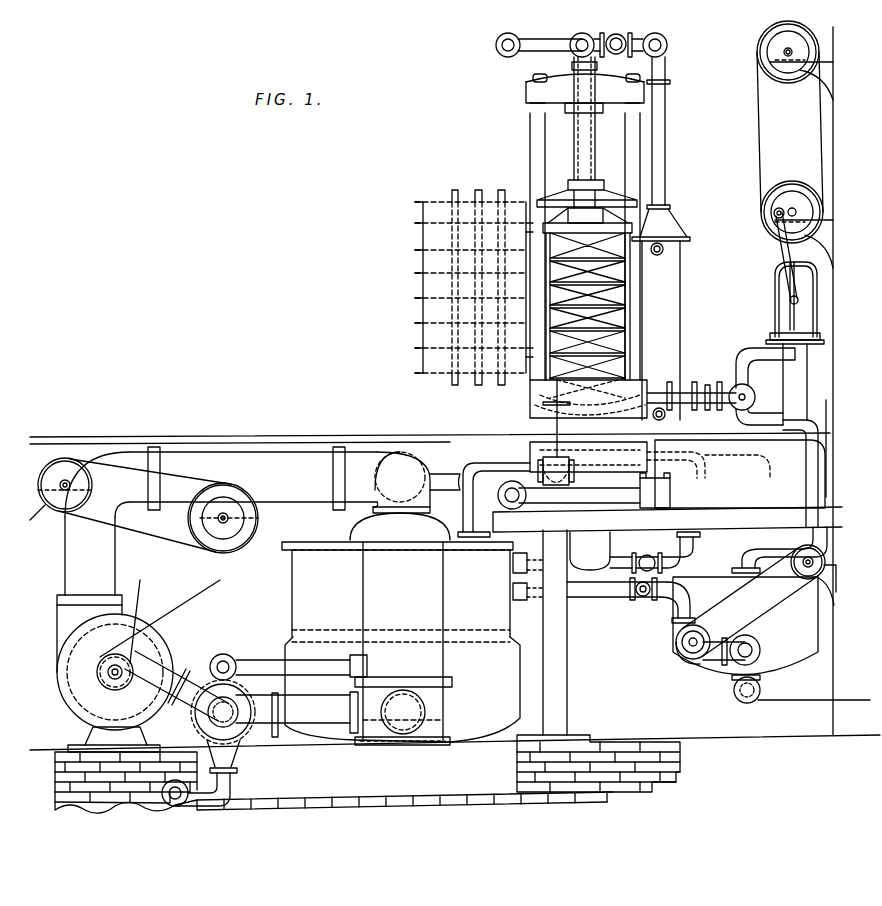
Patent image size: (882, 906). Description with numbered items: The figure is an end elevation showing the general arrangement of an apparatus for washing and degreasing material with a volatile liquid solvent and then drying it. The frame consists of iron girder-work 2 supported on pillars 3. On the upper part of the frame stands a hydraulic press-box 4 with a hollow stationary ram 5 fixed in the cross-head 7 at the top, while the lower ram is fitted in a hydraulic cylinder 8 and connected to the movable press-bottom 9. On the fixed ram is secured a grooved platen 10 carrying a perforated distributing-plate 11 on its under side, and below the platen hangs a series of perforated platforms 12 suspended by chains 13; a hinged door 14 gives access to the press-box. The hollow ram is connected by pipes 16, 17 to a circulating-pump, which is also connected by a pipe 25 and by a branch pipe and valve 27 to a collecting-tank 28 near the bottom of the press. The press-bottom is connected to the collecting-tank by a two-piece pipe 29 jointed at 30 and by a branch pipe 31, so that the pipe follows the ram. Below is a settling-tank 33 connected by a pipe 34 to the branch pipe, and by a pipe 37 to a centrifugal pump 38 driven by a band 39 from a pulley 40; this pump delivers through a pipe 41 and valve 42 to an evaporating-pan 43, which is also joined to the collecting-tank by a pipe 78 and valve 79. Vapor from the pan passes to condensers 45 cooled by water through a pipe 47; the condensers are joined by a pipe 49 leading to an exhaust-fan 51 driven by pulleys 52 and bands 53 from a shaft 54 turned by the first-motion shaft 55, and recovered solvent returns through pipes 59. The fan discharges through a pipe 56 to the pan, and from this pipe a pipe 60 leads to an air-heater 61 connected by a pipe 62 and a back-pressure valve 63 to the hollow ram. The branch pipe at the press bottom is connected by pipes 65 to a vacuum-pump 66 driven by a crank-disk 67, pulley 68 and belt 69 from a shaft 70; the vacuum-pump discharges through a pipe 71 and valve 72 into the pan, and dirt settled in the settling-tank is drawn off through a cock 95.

The iron girder-work 2 is at (667, 519).
The pillars 3 is at (555, 632).
The hydraulic press-box 4 is at (596, 186).
The ram 5 is at (584, 118).
The cross-head 7 is at (586, 273).
The hydraulic cylinder 8 is at (590, 551).
The movable press-bottom 9 is at (588, 418).
The platen 10 is at (587, 222).
The distributing-plate 11 is at (553, 234).
The perforated platforms 12 is at (587, 305).
The chains 13 is at (587, 364).
The hinged door 14 is at (468, 287).
The branch pipes 16 is at (584, 33).
The pipe 17 is at (539, 39).
The pipe 25 is at (498, 494).
The branch pipe and valve 27 is at (594, 490).
The collecting-tank 28 is at (740, 474).
The pipe 29 is at (676, 375).
The joint 30 is at (697, 376).
The branch pipe 31 is at (720, 384).
The settling-tank 33 is at (745, 626).
The pipe 34 is at (809, 477).
The pipe 37 is at (732, 645).
The centrifugal pump 38 is at (686, 657).
The band 39 is at (778, 598).
The pulley 40 is at (814, 580).
The pipe 41 is at (592, 600).
The valve 42 is at (642, 598).
The evaporating-pan 43 is at (402, 691).
The condensers 45 is at (397, 641).
The pipe 47 is at (250, 663).
The pipe 49 is at (200, 722).
The exhaust-fan 51 is at (115, 673).
The pulleys 52 is at (97, 667).
The bands 53 is at (180, 628).
The shaft 54 is at (248, 518).
The first-motion shaft 55 is at (74, 465).
The pipe 56 is at (257, 521).
The pipes 59 is at (230, 783).
The pipe 60 is at (452, 476).
The air-heater 61 is at (661, 330).
The pipe 62 is at (668, 46).
The back-pressure valve 63 is at (616, 34).
The pipes 65 is at (758, 356).
The vacuum-pump 66 is at (808, 395).
The crank-disk 67 is at (786, 248).
The pulley 68 is at (800, 182).
The belt 69 is at (761, 128).
The shaft 70 is at (757, 48).
The pipe 71 is at (492, 474).
The valve 72 is at (540, 466).
The pipe 78 is at (523, 560).
The valve 79 is at (651, 553).
The cock 95 is at (761, 689).